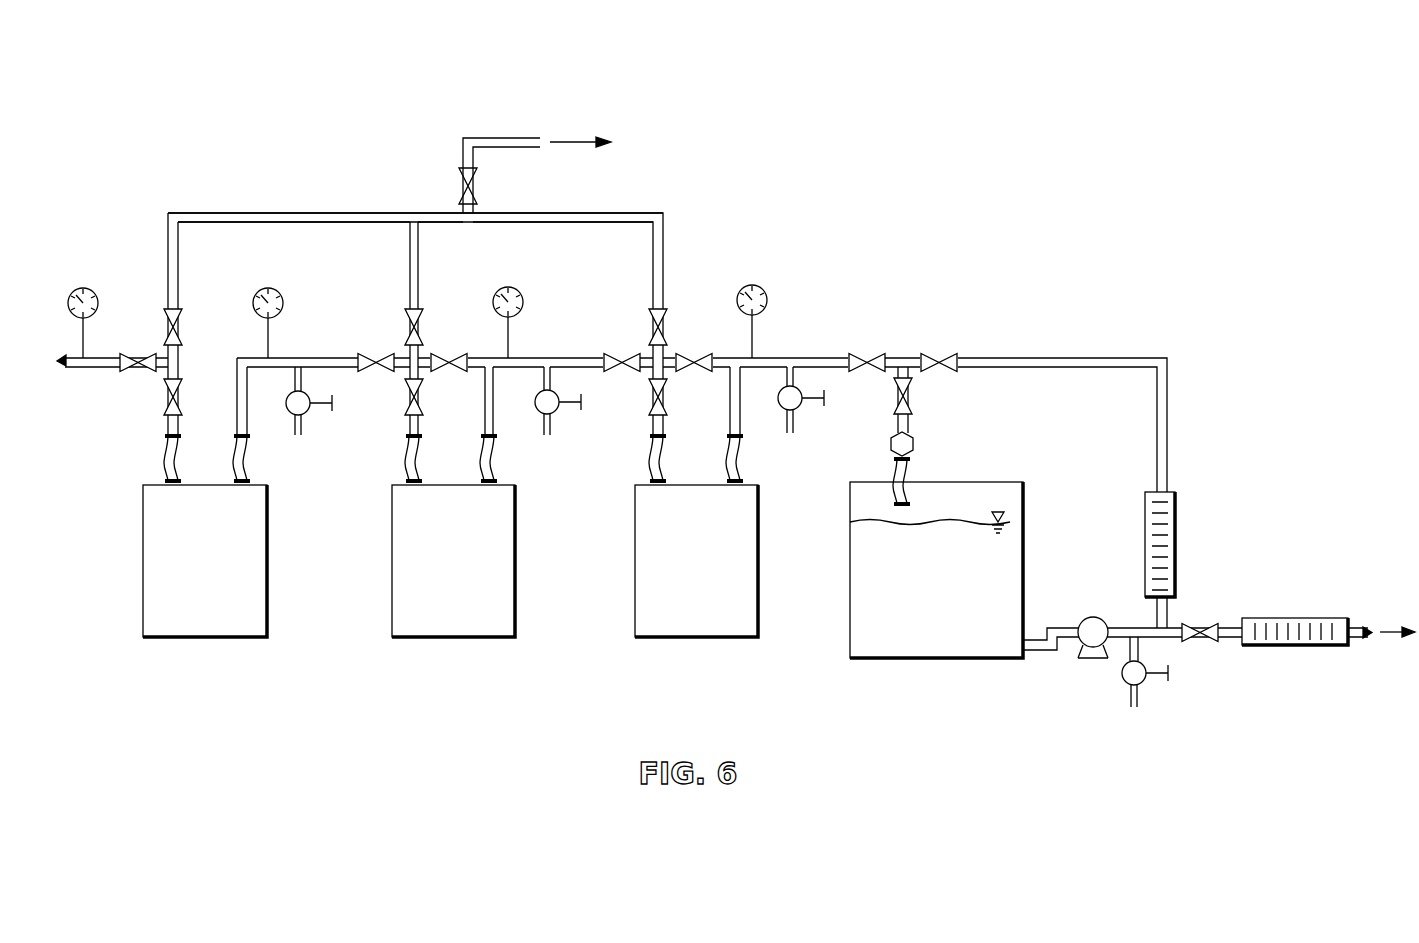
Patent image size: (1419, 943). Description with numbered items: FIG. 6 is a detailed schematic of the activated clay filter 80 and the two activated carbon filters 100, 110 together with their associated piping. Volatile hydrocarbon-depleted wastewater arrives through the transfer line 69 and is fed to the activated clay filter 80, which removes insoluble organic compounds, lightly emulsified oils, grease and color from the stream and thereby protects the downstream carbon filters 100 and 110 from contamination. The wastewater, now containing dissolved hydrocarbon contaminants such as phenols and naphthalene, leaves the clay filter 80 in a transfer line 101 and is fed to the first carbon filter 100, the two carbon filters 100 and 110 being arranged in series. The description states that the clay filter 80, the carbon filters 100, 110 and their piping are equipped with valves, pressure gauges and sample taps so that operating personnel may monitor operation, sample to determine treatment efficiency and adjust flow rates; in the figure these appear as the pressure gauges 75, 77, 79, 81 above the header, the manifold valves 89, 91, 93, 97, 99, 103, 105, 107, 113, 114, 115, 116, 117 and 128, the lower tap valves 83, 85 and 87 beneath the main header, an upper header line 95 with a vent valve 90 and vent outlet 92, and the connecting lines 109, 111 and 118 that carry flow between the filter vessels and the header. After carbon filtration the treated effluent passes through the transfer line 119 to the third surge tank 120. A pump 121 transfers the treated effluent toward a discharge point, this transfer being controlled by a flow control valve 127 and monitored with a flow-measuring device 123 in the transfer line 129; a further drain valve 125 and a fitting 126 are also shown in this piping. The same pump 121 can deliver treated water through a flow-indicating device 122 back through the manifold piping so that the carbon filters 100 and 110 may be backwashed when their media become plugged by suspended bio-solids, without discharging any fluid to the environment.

The transfer line 69 is at (72, 370).
The pressure gauge 75 is at (88, 287).
The pressure gauge 77 is at (275, 288).
The pressure gauge 79 is at (510, 287).
The pressure gauge 81 is at (758, 285).
The activated clay filter 80 is at (268, 605).
The drain valve 83 is at (308, 411).
The drain valve 85 is at (558, 412).
The drain valve 87 is at (803, 411).
The inlet valve 89 is at (122, 368).
The vent valve 90 is at (458, 178).
The valve 91 is at (182, 390).
The vent line 92 is at (507, 138).
The valve 93 is at (182, 320).
The bypass line 95 is at (258, 212).
The valve 97 is at (408, 317).
The valve 99 is at (667, 312).
The carbon filter 100 is at (516, 603).
The transfer line 101 is at (248, 410).
The valve 103 is at (363, 357).
The valve 105 is at (412, 392).
The valve 107 is at (437, 360).
The filter outlet line 109 is at (497, 412).
The carbon filter 110 is at (759, 603).
The line 111 is at (570, 355).
The valve 113 is at (620, 352).
The valve 114 is at (908, 386).
The valve 115 is at (678, 355).
The valve 116 is at (877, 352).
The valve 117 is at (650, 387).
The filter outlet line 118 is at (745, 408).
The transfer line 119 is at (810, 355).
The third surge tank 120 is at (1025, 547).
The pump 121 is at (1093, 617).
The flow-indicating device 122 is at (1176, 515).
The flow-measuring device 123 is at (1265, 617).
The drain valve 125 is at (1122, 680).
The fitting 126 is at (914, 443).
The flow control valve 127 is at (1190, 622).
The valve 128 is at (945, 352).
The transfer line 129 is at (1385, 630).